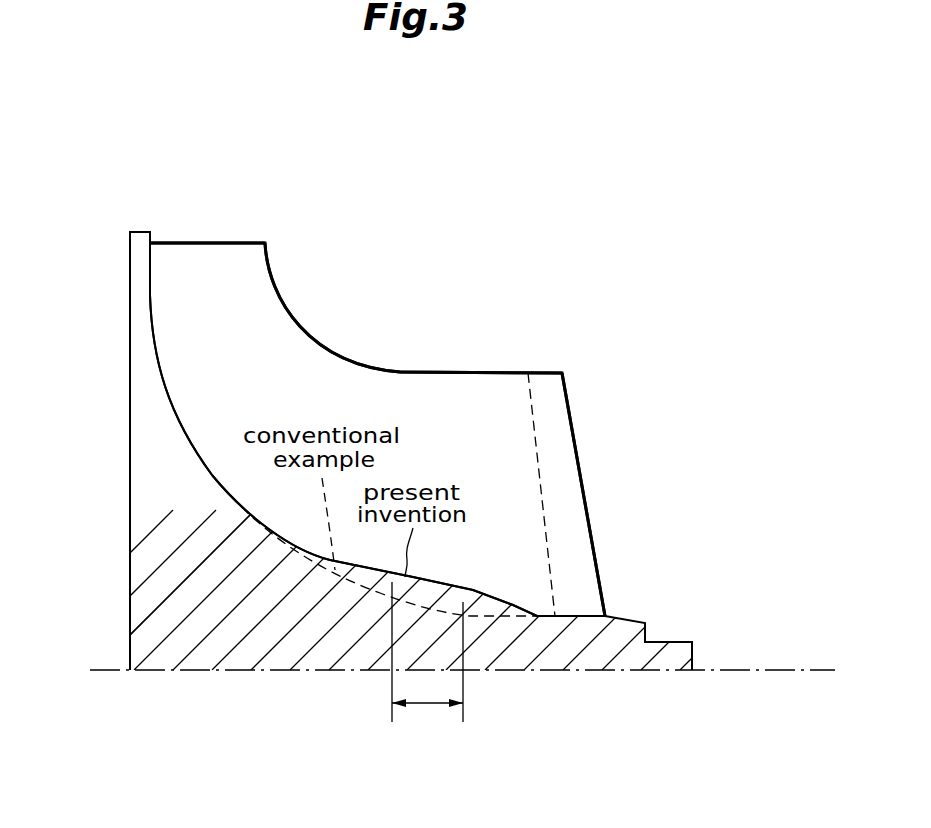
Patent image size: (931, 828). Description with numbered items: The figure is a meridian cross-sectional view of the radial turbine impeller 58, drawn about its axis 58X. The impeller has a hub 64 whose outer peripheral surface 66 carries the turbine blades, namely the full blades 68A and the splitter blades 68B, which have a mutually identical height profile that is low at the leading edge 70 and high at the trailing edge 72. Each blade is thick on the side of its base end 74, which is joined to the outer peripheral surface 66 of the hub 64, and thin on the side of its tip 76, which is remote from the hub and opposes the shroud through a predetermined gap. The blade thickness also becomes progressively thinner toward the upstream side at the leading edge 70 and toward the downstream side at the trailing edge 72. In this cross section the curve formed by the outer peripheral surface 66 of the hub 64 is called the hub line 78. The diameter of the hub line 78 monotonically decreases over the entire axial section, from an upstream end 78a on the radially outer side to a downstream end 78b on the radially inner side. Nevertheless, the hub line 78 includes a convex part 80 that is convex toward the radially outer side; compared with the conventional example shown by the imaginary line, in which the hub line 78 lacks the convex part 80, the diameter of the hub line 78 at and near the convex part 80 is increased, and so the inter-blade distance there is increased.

The radial turbine impeller 58 is at (418, 290).
The central axis of piston 58X is at (770, 669).
The hub 64 is at (155, 540).
The outer peripheral surface 66 is at (150, 350).
The full blade 68A is at (293, 342).
The splitter blade 68B is at (532, 412).
The leading edge 70 is at (203, 250).
The trailing edge 72 is at (547, 545).
The base end 74 is at (183, 437).
The tip 76 is at (413, 370).
The hub line 78 is at (470, 590).
The upstream end 78a is at (150, 240).
The downstream end 78b is at (555, 616).
The convex part 80 is at (428, 706).